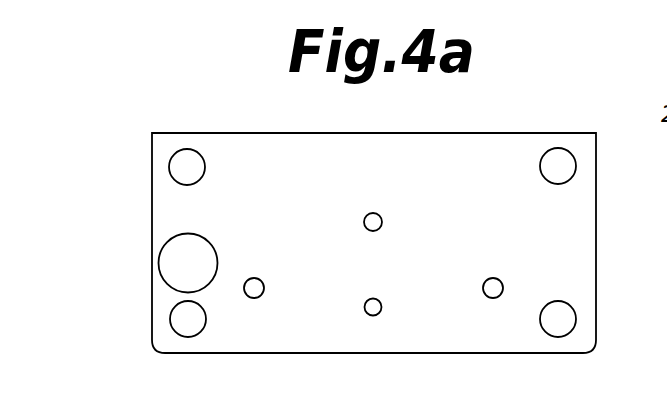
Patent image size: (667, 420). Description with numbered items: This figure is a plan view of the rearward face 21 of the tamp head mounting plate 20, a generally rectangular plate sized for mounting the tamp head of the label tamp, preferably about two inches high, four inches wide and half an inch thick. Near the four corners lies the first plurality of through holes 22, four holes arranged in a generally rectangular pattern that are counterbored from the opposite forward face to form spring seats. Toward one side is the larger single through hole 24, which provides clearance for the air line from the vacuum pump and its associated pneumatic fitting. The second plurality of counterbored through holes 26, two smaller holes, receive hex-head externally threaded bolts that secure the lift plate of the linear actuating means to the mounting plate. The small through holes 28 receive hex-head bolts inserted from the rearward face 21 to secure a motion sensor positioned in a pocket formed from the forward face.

The tamp head mounting plate 20 is at (130, 188).
The rearward face 21 is at (470, 177).
The first plurality of through holes 22 is at (190, 167).
The single through hole 24 is at (175, 269).
The second plurality of counterbored through holes 26 is at (258, 296).
The through holes 28 is at (377, 310).